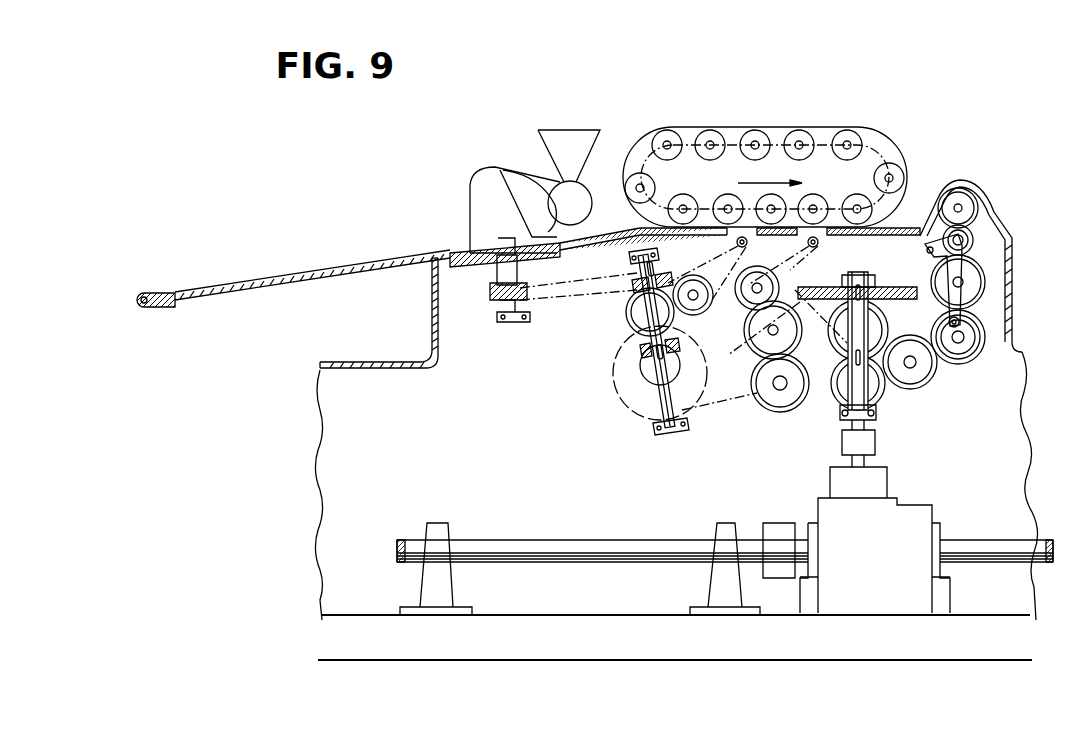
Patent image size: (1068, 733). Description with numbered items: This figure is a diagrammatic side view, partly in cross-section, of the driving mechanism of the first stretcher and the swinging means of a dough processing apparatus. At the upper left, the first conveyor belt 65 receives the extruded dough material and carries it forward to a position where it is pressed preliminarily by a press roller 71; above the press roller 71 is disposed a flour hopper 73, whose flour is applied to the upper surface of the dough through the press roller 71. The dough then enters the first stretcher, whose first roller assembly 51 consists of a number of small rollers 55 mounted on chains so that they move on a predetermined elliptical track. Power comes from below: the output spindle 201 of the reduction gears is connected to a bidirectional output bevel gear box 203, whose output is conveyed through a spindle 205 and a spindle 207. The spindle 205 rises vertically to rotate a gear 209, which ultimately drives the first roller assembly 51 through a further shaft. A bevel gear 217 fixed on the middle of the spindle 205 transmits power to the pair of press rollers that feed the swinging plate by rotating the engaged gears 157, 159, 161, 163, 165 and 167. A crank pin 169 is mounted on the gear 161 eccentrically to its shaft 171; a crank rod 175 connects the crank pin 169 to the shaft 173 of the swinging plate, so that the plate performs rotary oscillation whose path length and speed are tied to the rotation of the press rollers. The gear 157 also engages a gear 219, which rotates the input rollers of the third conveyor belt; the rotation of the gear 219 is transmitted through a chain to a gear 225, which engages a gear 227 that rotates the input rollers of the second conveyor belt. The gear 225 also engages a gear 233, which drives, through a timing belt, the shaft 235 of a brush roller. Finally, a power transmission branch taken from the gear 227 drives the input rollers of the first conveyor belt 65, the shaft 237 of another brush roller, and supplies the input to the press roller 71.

The first roller assembly 51 is at (712, 118).
The small rollers 55 is at (755, 132).
The first conveyor belt 65 is at (232, 296).
The press roller 71 is at (583, 193).
The flour hopper 73 is at (575, 133).
The gear 157 is at (880, 402).
The gear 159 is at (915, 380).
The gear 161 is at (975, 352).
The gear 163 is at (975, 283).
The gear 165 is at (973, 243).
The gear 167 is at (958, 190).
The crank pin 169 is at (960, 320).
The shaft 171 is at (959, 345).
The shaft of the swinging plate 173 is at (964, 238).
The crank rod 175 is at (927, 270).
The output spindle 201 is at (525, 547).
The bidirectional output bevel gear box 203 is at (913, 512).
The spindle 205 is at (850, 412).
The spindle 207 is at (990, 550).
The gear 209 is at (877, 274).
The bevel gear 217 is at (848, 392).
The gear 219 is at (878, 322).
The gear 225 is at (765, 345).
The gear 227 is at (779, 395).
The gear 233 is at (748, 294).
The shaft of the brush roller 235 is at (813, 248).
The shaft of the brush roller 237 is at (737, 244).